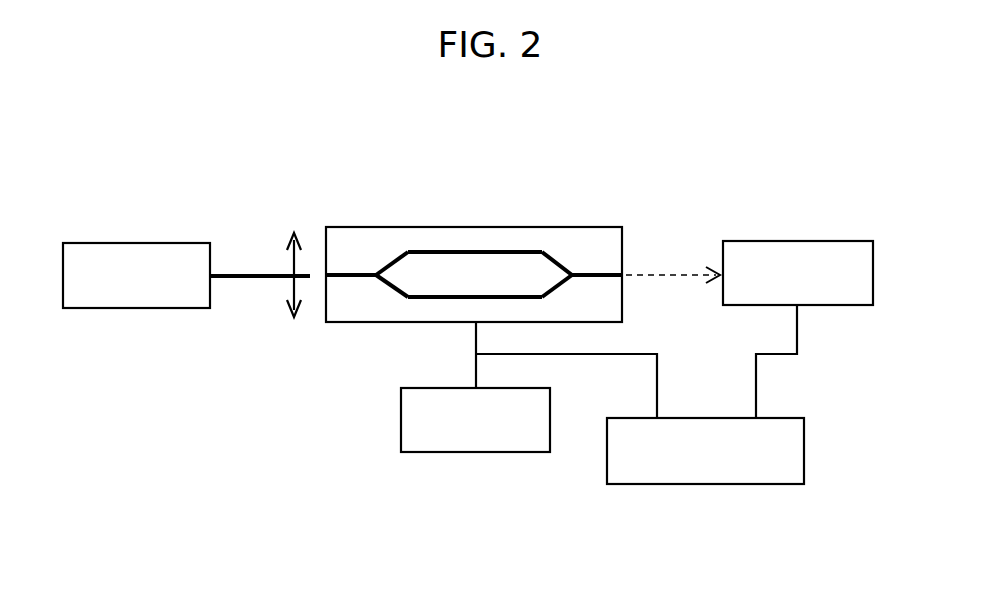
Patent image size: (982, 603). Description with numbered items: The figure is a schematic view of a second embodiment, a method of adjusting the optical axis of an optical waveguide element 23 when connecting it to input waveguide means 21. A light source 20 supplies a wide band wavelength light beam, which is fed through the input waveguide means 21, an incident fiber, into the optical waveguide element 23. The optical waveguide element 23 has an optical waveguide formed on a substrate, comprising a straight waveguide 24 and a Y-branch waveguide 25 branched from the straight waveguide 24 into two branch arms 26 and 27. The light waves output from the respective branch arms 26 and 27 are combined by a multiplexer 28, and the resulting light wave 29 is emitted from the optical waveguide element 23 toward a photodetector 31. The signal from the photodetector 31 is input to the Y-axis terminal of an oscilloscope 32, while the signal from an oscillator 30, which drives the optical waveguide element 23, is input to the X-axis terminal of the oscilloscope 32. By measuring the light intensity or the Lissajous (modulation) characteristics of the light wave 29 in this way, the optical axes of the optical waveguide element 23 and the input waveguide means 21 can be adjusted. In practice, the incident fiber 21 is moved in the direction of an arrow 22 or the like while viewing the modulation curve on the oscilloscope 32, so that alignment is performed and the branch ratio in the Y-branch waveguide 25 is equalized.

The light source 20 is at (128, 293).
The input waveguide means 21 is at (249, 273).
The arrow 22 is at (289, 286).
The optical waveguide element 23 is at (477, 211).
The straight waveguide 24 is at (346, 330).
The Y-branch waveguide 25 is at (372, 261).
The branch arm 26 is at (525, 250).
The branch arm 27 is at (435, 298).
The multiplexer 28 is at (576, 258).
The light wave 29 is at (673, 268).
The oscillator 30 is at (476, 437).
The photodetector 31 is at (805, 255).
The oscilloscope 32 is at (723, 468).